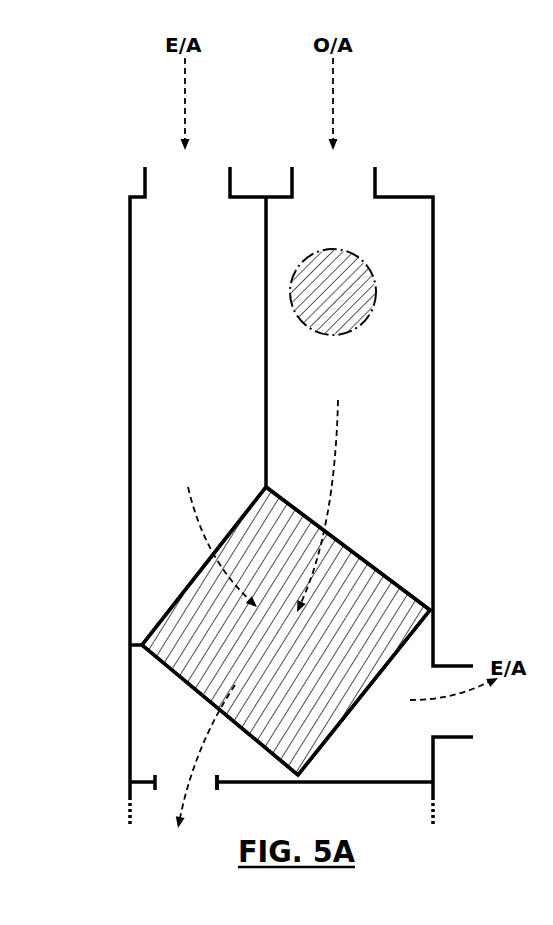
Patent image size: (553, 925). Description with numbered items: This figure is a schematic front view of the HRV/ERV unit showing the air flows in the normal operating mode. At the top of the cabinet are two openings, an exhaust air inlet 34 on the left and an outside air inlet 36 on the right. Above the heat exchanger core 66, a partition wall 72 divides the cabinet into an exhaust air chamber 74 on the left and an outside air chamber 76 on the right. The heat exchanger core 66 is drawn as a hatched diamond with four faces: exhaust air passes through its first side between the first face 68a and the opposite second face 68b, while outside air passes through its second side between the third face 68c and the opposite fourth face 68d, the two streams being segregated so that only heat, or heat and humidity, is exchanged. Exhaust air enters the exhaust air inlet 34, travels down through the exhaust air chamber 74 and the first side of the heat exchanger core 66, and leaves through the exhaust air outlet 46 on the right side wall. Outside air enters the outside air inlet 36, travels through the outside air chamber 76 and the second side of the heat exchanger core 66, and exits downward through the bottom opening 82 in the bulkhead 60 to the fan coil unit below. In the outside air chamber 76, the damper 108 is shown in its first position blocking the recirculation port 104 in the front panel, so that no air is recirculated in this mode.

The exhaust air inlet 34 is at (143, 180).
The outside air inlet 36 is at (378, 183).
The exhaust air outlet 46 is at (455, 737).
The bulkhead 60 is at (328, 782).
The heat exchanger core 66 is at (301, 662).
The first face 68a is at (183, 585).
The second face 68b is at (333, 744).
The third face 68c is at (386, 574).
The fourth face 68d is at (182, 687).
The partition wall 72 is at (265, 338).
The exhaust air chamber 74 is at (175, 417).
The outside air chamber 76 is at (393, 458).
The bottom opening 82 is at (220, 784).
The recirculation port 104 is at (360, 258).
The damper 108 is at (360, 290).